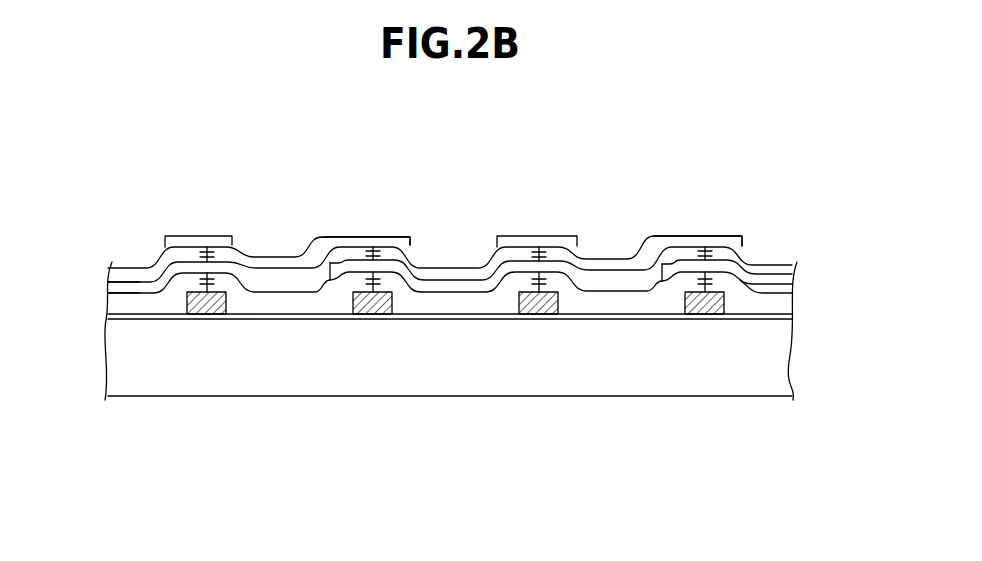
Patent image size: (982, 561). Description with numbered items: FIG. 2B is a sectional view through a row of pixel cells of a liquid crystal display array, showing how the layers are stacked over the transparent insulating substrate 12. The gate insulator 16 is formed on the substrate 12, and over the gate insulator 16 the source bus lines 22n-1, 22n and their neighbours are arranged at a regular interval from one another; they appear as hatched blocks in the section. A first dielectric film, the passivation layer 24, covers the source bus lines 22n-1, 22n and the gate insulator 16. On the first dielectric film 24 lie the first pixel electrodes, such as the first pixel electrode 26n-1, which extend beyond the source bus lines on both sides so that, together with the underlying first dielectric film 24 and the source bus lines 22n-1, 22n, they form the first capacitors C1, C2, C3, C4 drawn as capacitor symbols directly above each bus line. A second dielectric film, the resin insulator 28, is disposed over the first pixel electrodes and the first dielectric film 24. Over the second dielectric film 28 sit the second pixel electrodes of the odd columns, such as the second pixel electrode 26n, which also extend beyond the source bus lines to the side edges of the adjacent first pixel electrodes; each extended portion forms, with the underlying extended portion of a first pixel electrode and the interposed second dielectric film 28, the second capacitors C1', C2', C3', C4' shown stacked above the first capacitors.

The insulating substrate 12 is at (786, 358).
The gate insulating layer 16 is at (788, 317).
The source bus line 22n-1 is at (204, 314).
The source bus line 22n is at (370, 314).
The passivation layer 24 is at (786, 302).
The first pixel electrode 26n-1 is at (126, 290).
The second pixel electrode 26n is at (214, 243).
The resin insulator 28 is at (786, 272).
The first capacitor C1 is at (252, 260).
The second capacitor C1' is at (243, 229).
The first capacitor C2 is at (418, 260).
The second capacitor C2' is at (409, 228).
The first capacitor C3 is at (584, 260).
The second capacitor C3' is at (575, 228).
The first capacitor C4 is at (750, 260).
The second capacitor C4' is at (741, 228).